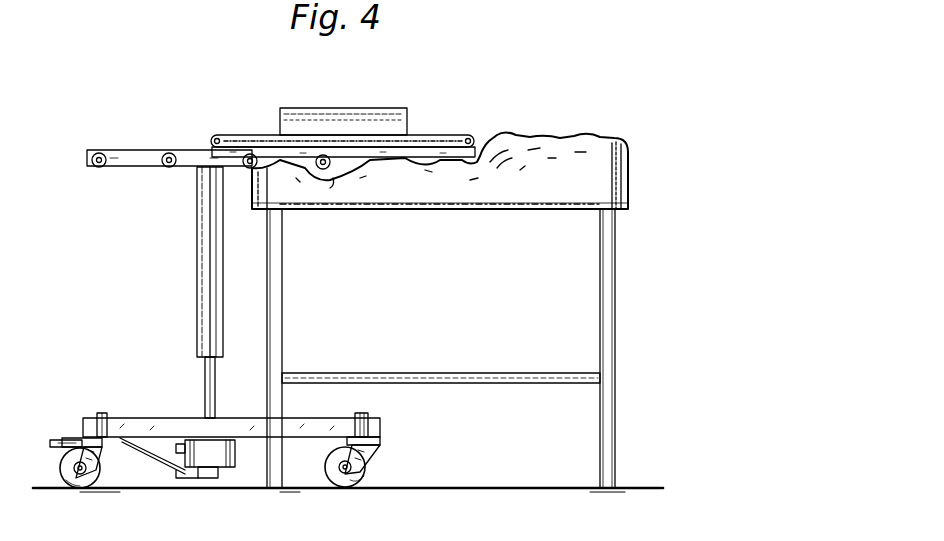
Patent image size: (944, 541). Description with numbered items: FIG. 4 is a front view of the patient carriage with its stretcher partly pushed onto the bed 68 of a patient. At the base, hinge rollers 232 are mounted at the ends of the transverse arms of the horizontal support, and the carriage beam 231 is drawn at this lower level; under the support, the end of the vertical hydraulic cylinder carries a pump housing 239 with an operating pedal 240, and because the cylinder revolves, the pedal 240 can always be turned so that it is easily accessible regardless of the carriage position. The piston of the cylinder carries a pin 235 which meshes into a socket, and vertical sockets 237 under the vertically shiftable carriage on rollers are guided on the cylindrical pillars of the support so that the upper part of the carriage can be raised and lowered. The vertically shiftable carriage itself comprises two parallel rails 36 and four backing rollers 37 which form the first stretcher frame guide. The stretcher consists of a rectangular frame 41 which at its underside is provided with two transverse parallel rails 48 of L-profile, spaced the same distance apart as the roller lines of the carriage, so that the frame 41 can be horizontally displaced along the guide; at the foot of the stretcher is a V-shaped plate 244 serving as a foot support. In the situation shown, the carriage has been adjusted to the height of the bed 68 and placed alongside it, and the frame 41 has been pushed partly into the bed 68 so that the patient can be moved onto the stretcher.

The parallel rails 36 is at (133, 155).
The backing rollers 37 is at (101, 156).
The stretcher frame 41 is at (237, 150).
The transverse parallel rails 48 is at (224, 153).
The bed 68 is at (513, 153).
The carriage beam 231 is at (193, 426).
The hinge rollers 232 is at (62, 468).
The pin 235 is at (212, 380).
The vertical sockets 237 is at (210, 229).
The pump housing 239 is at (213, 452).
The operating pedal 240 is at (73, 439).
The V-shaped plate 244 is at (304, 124).